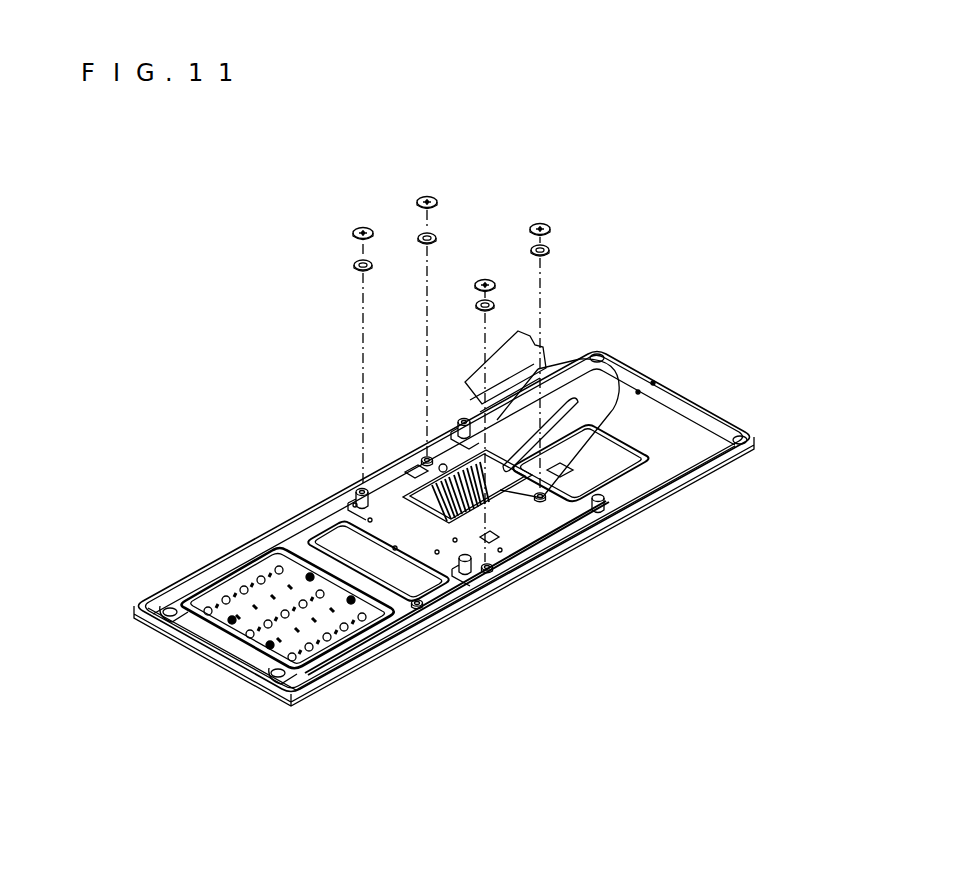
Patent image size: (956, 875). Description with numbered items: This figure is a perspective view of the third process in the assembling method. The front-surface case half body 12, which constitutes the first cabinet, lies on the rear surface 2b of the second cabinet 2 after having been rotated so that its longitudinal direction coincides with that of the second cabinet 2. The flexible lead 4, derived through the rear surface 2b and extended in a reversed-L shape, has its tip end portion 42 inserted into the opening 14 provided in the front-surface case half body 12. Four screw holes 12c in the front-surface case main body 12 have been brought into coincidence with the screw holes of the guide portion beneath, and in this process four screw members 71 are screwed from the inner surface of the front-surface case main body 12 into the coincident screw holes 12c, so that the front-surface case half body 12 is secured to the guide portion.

The second cabinet 2 is at (700, 473).
The rear surface of the second cabinet 2b is at (612, 475).
The flexible lead 4 is at (598, 385).
The tip end portion of the flexible lead 42 is at (525, 340).
The front-surface case half body 12 is at (428, 625).
The screw holes 12c is at (430, 488).
The opening 14 is at (421, 445).
The screw members 71 is at (362, 222).